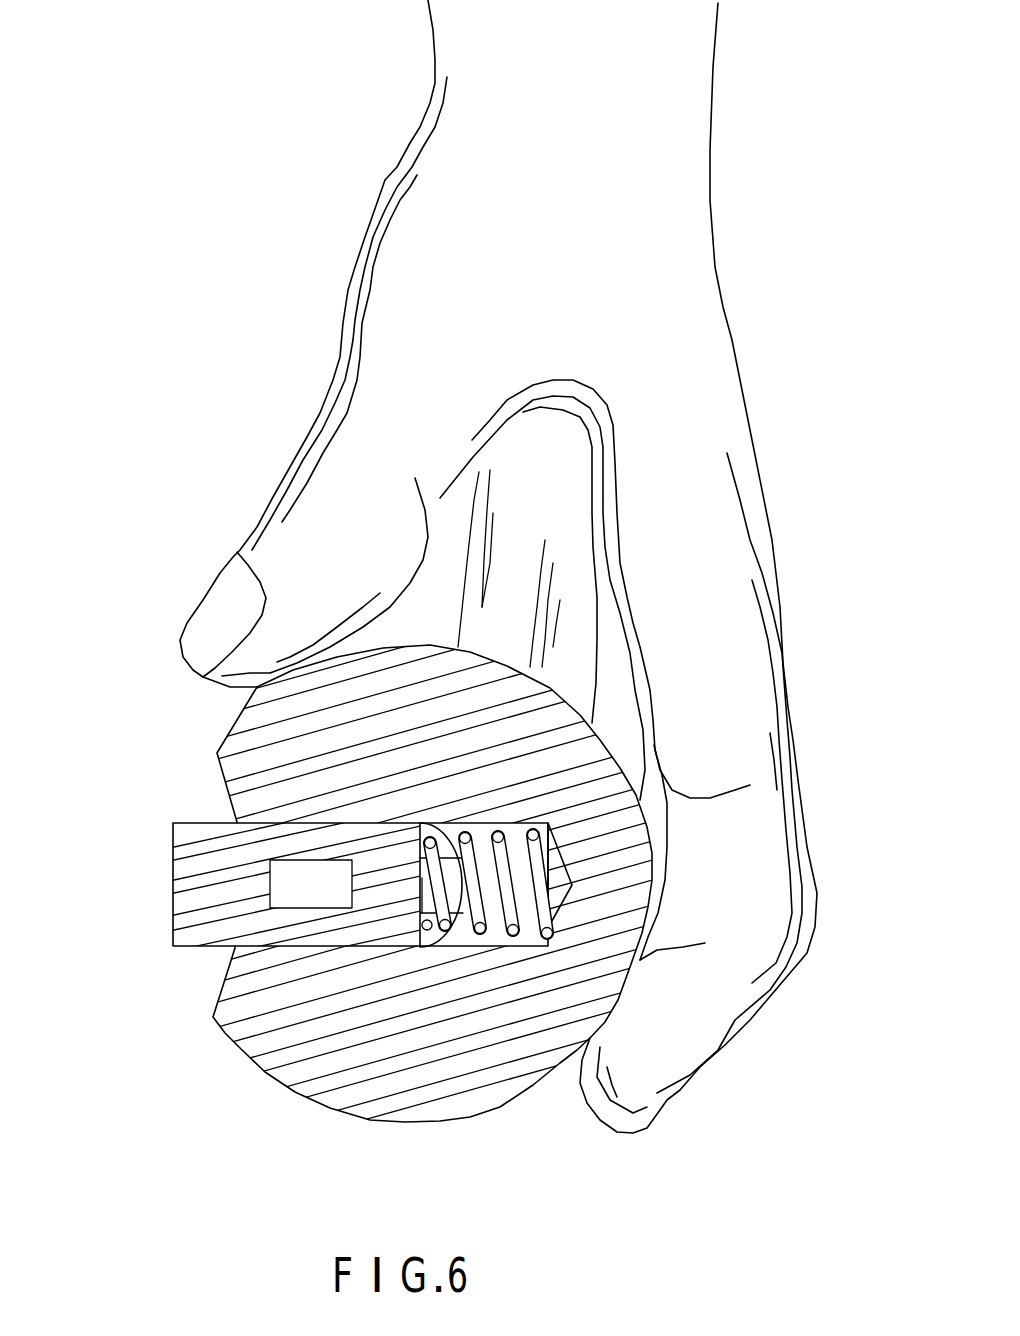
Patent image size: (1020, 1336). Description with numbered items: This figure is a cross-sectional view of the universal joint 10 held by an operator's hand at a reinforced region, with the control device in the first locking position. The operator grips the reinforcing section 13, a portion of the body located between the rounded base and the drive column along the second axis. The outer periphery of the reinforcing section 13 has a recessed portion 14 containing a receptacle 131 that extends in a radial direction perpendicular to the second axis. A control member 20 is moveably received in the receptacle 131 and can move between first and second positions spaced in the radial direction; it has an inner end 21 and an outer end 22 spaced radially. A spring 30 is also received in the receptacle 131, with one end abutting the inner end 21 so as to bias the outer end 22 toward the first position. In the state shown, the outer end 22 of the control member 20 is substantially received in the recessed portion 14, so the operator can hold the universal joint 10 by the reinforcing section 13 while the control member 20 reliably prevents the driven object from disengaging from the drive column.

The universal joint 10 is at (253, 1110).
The reinforcing section 13 is at (435, 999).
The receptacle 131 is at (459, 1037).
The recessed portion 14 is at (389, 883).
The control member 20 is at (304, 889).
The inner end 21 is at (465, 1012).
The outer end 22 is at (206, 884).
The spring 30 is at (496, 1010).